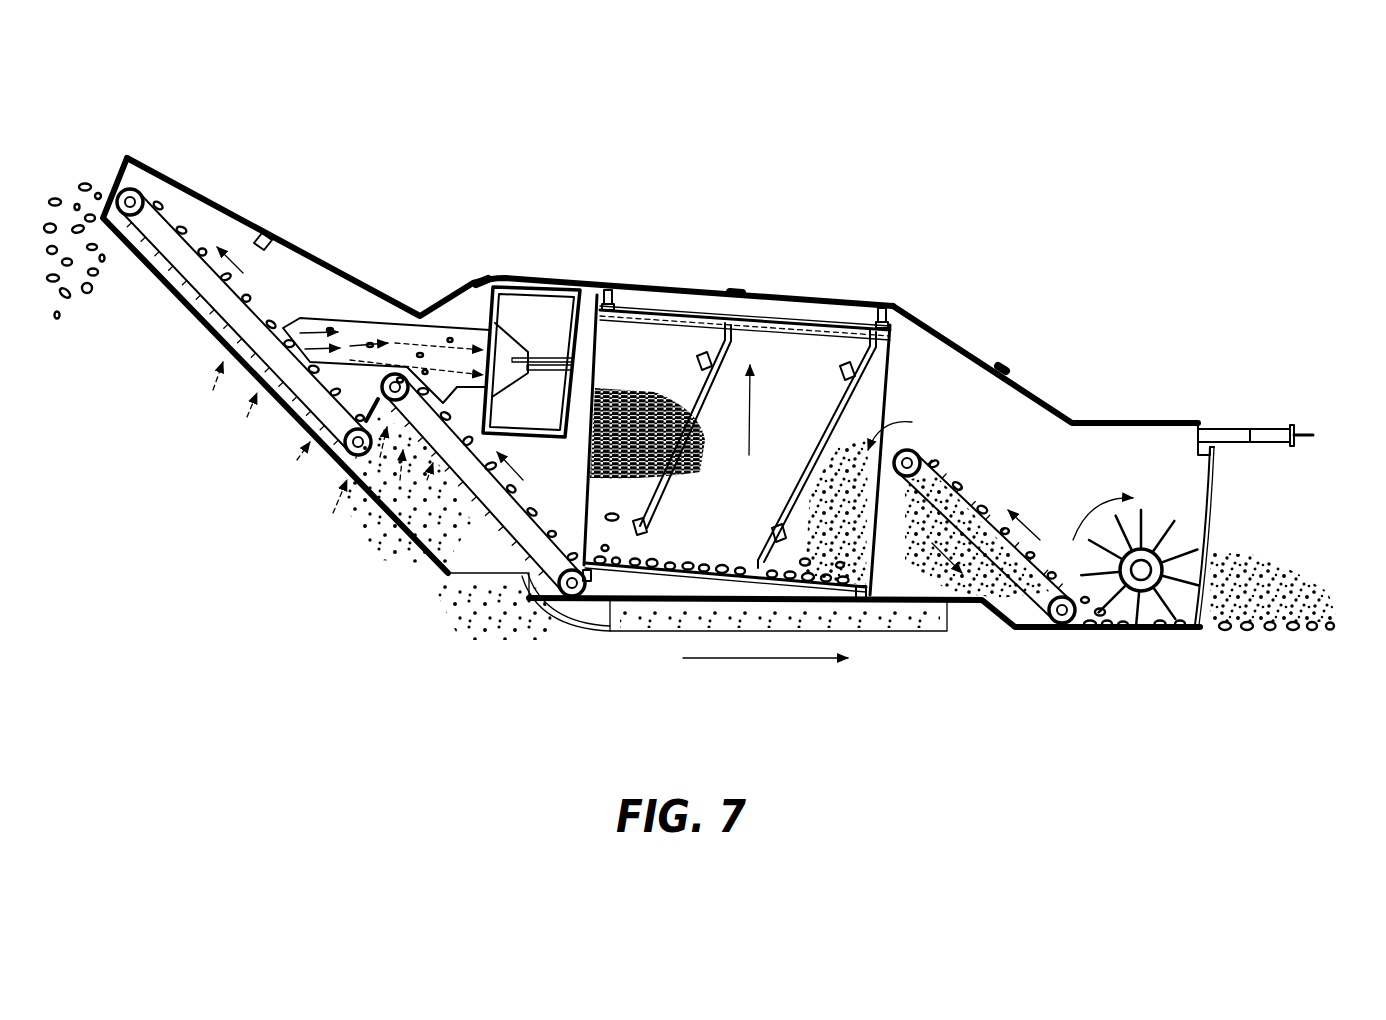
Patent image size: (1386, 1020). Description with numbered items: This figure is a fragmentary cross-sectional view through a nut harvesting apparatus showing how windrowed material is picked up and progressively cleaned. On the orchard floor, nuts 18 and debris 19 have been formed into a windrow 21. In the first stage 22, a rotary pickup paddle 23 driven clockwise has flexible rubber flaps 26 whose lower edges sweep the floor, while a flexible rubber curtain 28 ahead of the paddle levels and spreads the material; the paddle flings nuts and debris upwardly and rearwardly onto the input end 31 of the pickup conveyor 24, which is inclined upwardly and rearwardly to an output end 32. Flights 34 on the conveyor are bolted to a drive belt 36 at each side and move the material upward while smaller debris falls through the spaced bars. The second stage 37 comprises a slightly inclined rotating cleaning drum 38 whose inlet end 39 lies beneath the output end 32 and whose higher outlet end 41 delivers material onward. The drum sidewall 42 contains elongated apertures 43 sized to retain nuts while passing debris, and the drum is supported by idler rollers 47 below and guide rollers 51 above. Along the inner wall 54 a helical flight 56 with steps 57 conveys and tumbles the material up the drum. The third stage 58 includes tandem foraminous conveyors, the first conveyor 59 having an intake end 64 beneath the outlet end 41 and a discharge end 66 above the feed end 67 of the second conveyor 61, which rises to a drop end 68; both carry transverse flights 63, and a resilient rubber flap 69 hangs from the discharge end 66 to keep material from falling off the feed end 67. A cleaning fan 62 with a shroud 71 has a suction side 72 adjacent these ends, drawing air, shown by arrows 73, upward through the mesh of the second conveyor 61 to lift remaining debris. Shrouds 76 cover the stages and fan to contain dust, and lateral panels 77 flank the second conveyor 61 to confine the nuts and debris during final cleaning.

The nuts 18 is at (85, 182).
The debris 19 is at (987, 468).
The windrow 21 is at (1297, 580).
The first stage 22 is at (1053, 387).
The rotary pickup paddle 23 is at (1150, 467).
The pickup conveyor 24 is at (1033, 505).
The flexible rubber flaps 26 is at (1163, 533).
The flexible rubber curtain 28 is at (1217, 545).
The input end 31 is at (1070, 630).
The output end 32 is at (912, 448).
The flights 34 is at (966, 536).
The drive belt 36 is at (1027, 553).
The second stage 37 is at (704, 280).
The cleaning drum 38 is at (752, 314).
The inlet end 39 is at (878, 580).
The outlet end 41 is at (602, 346).
The sidewall 42 is at (800, 318).
The apertures 43 is at (637, 400).
The idler rollers 47 is at (597, 588).
The guide rollers 51 is at (607, 296).
The inner wall 54 is at (868, 387).
The helical flight 56 is at (817, 425).
The steps 57 is at (705, 368).
The third stage 58 is at (268, 175).
The first conveyor 59 is at (385, 503).
The second conveyor 61 is at (183, 308).
The cleaning fan 62 is at (537, 285).
The flights 63 is at (192, 236).
The intake end 64 is at (552, 590).
The discharge end 66 is at (368, 478).
The feed end 67 is at (343, 455).
The drop end 68 is at (183, 213).
The resilient rubber flap 69 is at (300, 425).
The shroud 71 is at (375, 322).
The suction side 72 is at (217, 340).
The arrows 73 is at (243, 412).
The shrouds 76 is at (483, 282).
The lateral panels 77 is at (272, 236).